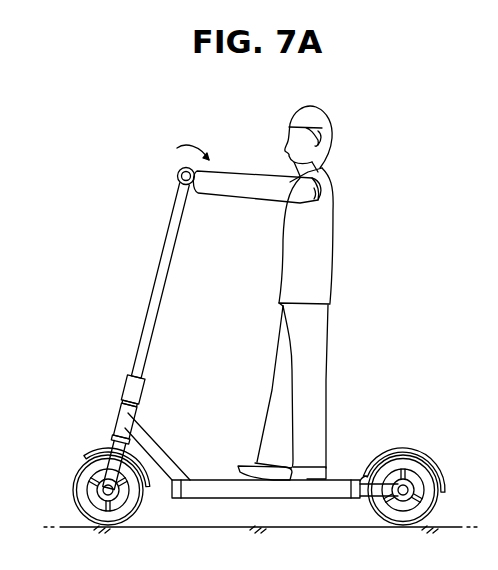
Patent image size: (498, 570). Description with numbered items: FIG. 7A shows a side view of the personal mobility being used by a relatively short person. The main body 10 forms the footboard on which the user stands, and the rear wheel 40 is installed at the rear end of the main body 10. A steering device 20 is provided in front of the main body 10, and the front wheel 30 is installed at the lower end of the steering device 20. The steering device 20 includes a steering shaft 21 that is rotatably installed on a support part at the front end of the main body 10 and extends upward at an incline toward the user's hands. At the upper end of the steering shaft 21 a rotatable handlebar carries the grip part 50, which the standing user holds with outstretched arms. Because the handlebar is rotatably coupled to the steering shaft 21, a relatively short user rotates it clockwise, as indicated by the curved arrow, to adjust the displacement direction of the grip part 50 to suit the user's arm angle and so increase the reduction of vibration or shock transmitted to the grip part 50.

The main body 10 is at (213, 487).
The steering device 20 is at (115, 390).
The steering shaft 21 is at (157, 273).
The front wheel 30 is at (82, 500).
The rear wheel 40 is at (430, 498).
The grip part 50 is at (177, 177).